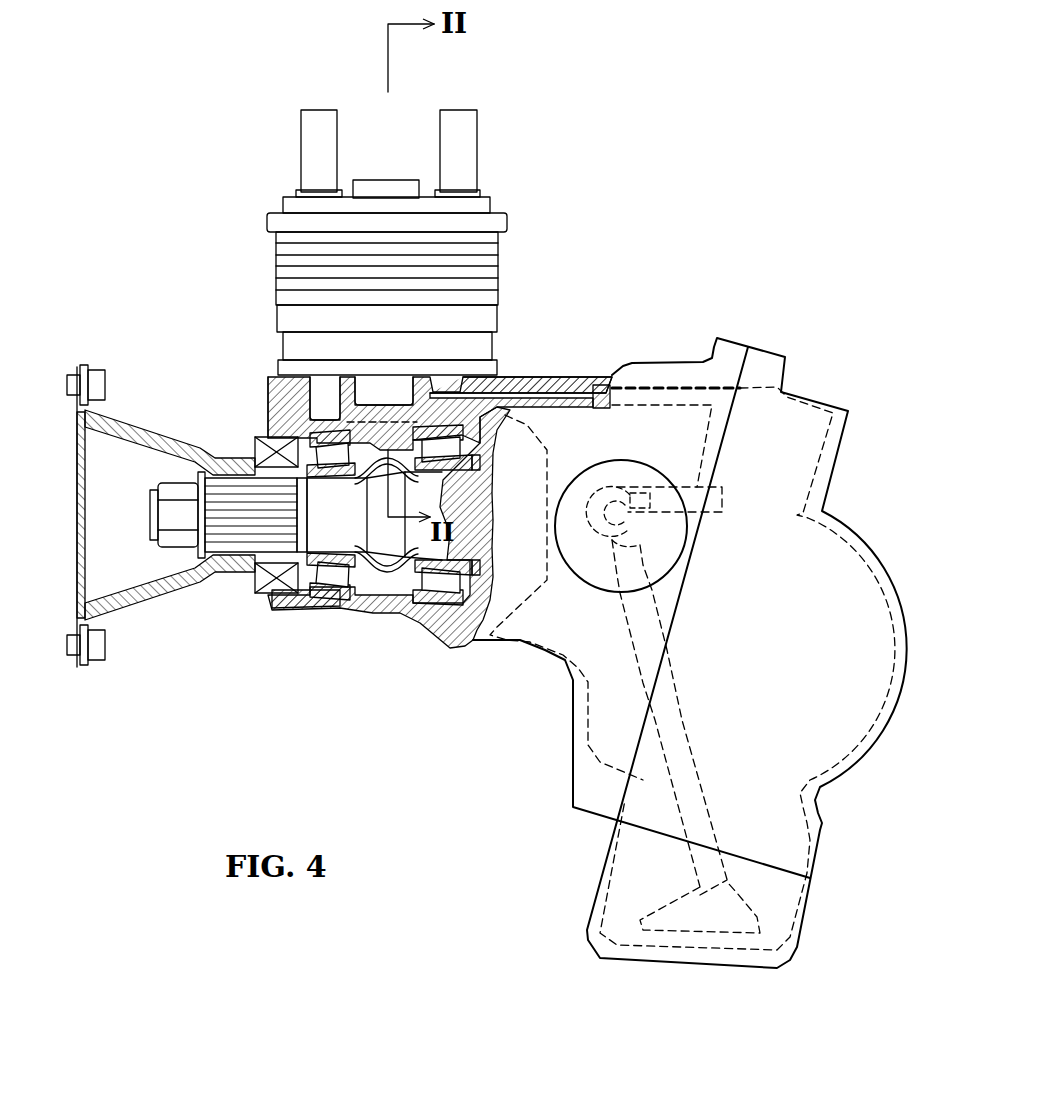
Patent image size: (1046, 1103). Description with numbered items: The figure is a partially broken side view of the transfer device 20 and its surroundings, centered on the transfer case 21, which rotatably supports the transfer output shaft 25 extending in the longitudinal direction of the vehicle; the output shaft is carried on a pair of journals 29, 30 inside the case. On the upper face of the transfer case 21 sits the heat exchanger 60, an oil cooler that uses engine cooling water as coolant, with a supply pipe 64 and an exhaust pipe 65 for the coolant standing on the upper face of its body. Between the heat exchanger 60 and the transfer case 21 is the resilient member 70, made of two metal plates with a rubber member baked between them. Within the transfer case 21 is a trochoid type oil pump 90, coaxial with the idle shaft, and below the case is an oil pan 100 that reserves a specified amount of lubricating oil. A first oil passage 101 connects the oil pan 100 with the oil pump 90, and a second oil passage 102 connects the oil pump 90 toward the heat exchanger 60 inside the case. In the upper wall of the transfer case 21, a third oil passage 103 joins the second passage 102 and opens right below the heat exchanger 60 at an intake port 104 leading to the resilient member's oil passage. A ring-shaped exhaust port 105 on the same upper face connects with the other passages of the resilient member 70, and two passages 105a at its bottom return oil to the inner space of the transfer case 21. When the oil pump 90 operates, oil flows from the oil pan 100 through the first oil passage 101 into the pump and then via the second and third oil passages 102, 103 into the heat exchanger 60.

The transfer device 20 is at (382, 697).
The transfer case 21 is at (278, 608).
The transfer output shaft 25 is at (383, 538).
The journal 29 is at (437, 572).
The journal 30 is at (322, 590).
The heat exchanger 60 is at (510, 246).
The supply pipe 64 is at (318, 118).
The exhaust pipe 65 is at (460, 118).
The resilient member 70 is at (267, 313).
The oil pump 90 is at (621, 456).
The oil pan 100 is at (808, 900).
The first oil passage 101 is at (637, 689).
The second oil passage 102 is at (722, 374).
The third oil passage 103 is at (555, 377).
The intake port 104 is at (370, 393).
The exhaust port 105 is at (325, 410).
The passage 105a is at (262, 432).